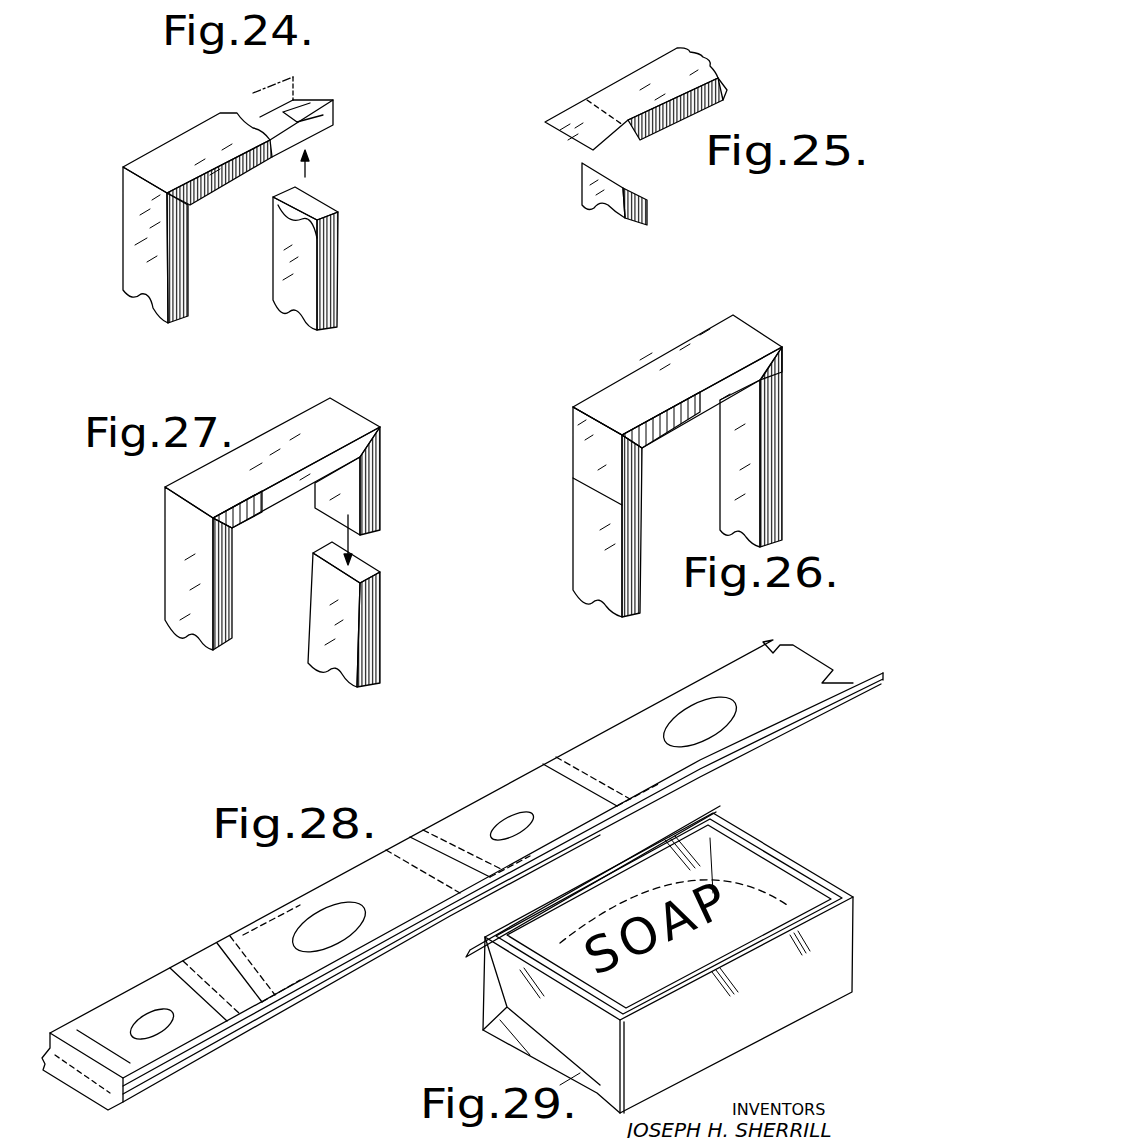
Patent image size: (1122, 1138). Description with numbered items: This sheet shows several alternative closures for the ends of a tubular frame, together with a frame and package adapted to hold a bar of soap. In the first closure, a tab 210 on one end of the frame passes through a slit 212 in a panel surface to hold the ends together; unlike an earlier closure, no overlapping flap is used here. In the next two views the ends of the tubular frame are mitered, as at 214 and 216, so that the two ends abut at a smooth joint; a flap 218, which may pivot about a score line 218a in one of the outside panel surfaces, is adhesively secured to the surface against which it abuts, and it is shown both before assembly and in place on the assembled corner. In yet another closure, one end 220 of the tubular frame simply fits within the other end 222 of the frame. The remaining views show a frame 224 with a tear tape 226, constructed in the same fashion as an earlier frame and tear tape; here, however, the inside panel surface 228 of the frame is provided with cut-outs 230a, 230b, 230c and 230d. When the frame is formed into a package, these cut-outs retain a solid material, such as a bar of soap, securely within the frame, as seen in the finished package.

In FIG. 24, the tab 210 is at (297, 216).
In FIG. 24, the slit 212 is at (290, 110).
In FIG. 25, the mitered end 214 is at (642, 193).
In FIG. 25, the mitered end 216 is at (635, 138).
In FIG. 25, the flap 218 is at (572, 117).
In FIG. 26, the flap 218 is at (580, 452).
In FIG. 25, the score line 218a is at (607, 110).
In FIG. 26, the score line 218a is at (597, 413).
In FIG. 27, the end of tubular frame 220 is at (370, 489).
In FIG. 27, the end of tubular frame 222 is at (373, 590).
In FIG. 28, the frame 224 is at (437, 814).
In FIG. 28, the tear tape 226 is at (873, 687).
In FIG. 29, the tear tape 226 is at (473, 950).
In FIG. 28, the inside panel surface 228 is at (230, 939).
In FIG. 28, the cut-out 230a is at (148, 1022).
In FIG. 28, the cut-out 230b is at (322, 922).
In FIG. 28, the cut-out 230c is at (507, 820).
In FIG. 28, the cut-out 230d is at (697, 715).